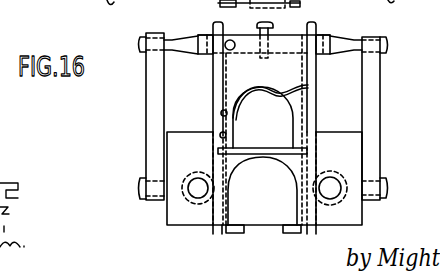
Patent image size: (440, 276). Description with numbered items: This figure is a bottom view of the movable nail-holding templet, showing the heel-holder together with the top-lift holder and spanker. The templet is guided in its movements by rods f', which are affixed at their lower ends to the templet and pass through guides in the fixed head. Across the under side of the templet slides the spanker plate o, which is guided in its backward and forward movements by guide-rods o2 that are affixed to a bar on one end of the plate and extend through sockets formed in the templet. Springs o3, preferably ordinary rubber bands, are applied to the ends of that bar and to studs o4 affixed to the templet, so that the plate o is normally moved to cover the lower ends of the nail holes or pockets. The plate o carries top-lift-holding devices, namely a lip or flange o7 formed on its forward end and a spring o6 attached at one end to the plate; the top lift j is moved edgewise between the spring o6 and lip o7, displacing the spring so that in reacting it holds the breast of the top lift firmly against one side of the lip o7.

The slide or spanker plate o is at (264, 127).
The guide-rods o2 is at (218, 30).
The springs o3 is at (157, 108).
The studs o4 is at (137, 187).
The spring o6 is at (270, 91).
The lip or flange o7 is at (247, 153).
The top lift j is at (280, 123).
The rods f' is at (248, 184).